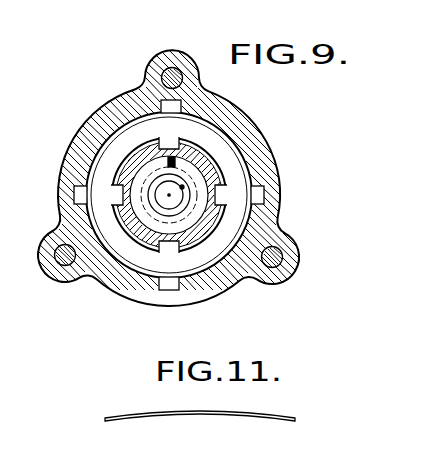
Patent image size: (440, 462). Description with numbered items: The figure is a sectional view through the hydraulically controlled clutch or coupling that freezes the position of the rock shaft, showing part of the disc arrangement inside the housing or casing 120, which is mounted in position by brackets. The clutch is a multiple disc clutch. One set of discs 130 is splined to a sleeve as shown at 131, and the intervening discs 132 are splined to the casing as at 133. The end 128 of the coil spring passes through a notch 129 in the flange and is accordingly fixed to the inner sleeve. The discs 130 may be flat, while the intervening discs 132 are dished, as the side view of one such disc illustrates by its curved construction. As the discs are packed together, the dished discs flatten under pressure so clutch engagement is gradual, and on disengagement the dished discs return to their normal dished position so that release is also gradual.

In FIG. 9, the housing 120 is at (146, 85).
In FIG. 9, the end of the spring 128 is at (177, 160).
In FIG. 9, the notch 129 is at (203, 148).
In FIG. 9, the discs 130 is at (240, 179).
In FIG. 9, the spline 131 is at (113, 194).
In FIG. 11, the intervening discs 132 is at (250, 417).
In FIG. 9, the spline 133 is at (265, 197).